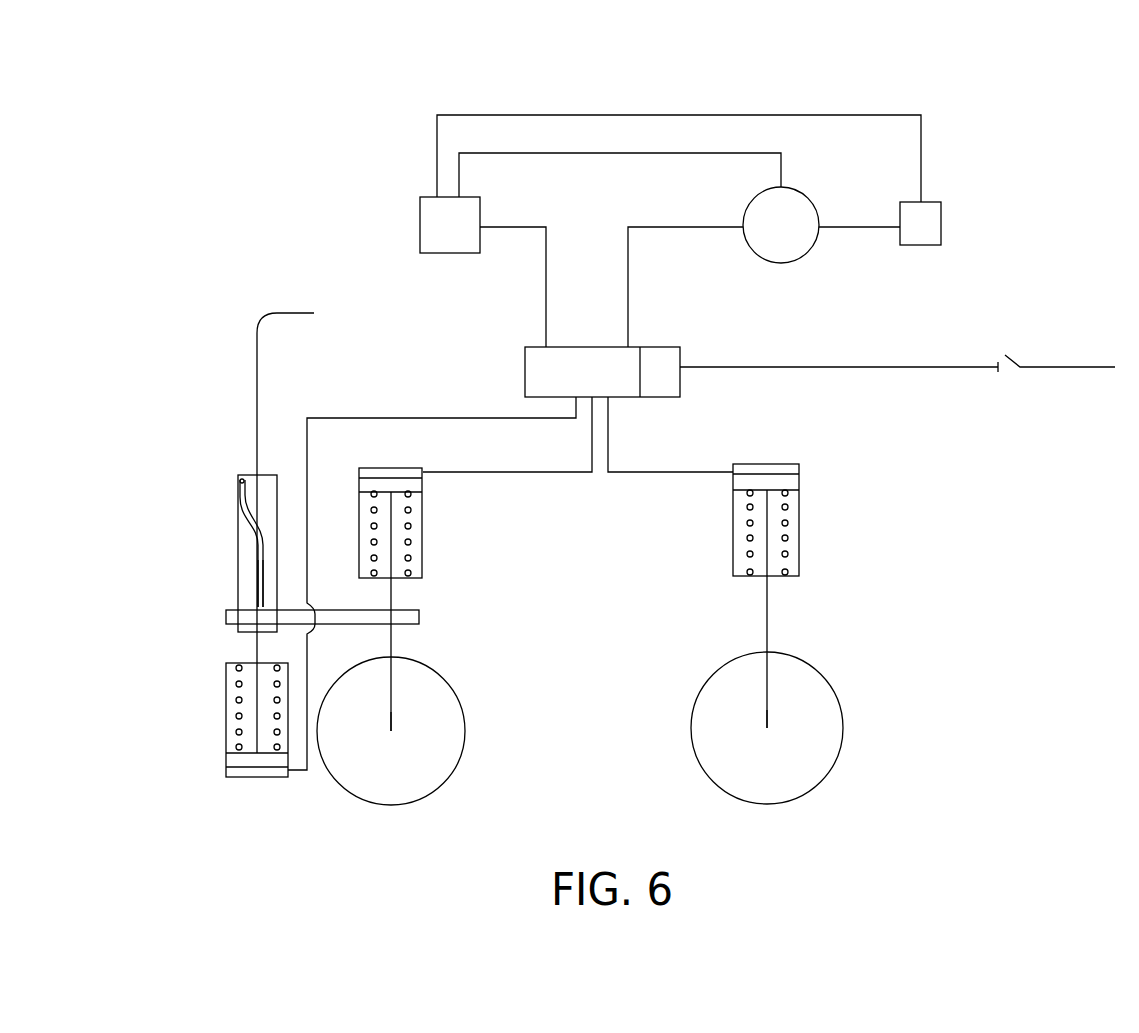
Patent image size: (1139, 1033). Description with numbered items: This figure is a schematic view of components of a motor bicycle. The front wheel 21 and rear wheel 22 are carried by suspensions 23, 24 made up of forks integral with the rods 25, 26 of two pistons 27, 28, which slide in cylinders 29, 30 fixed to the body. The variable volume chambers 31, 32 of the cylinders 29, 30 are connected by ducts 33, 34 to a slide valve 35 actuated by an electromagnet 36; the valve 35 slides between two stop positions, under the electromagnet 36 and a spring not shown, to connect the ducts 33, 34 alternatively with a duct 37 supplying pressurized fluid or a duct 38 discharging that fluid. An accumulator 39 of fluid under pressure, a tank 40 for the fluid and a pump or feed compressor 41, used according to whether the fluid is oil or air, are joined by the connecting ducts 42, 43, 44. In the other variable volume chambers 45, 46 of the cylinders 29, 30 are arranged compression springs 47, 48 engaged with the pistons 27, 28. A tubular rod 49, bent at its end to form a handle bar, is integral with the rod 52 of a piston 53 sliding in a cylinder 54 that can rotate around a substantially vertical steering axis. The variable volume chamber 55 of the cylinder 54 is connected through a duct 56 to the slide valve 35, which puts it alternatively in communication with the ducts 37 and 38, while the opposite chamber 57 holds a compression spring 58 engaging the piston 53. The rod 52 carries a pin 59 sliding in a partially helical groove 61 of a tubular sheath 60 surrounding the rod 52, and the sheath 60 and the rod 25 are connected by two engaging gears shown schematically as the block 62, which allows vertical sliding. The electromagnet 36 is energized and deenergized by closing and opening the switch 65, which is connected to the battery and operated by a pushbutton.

The front wheel 21 is at (410, 782).
The rear wheel 22 is at (793, 770).
The front suspension 23 is at (392, 724).
The rear suspension 24 is at (767, 714).
The piston rod 25 is at (392, 643).
The piston rod 26 is at (767, 627).
The piston 27 is at (403, 485).
The piston 28 is at (785, 483).
The cylinder 29 is at (423, 540).
The cylinder 30 is at (802, 533).
The variable volume chamber 31 is at (393, 470).
The variable volume chamber 32 is at (768, 467).
The duct 33 is at (573, 478).
The duct 34 is at (687, 478).
The slide valve 35 is at (540, 366).
The electromagnet 36 is at (655, 387).
The supply duct 37 is at (628, 260).
The discharge duct 38 is at (545, 267).
The accumulator 39 is at (760, 230).
The tank 40 is at (438, 221).
The pump or feed compressor 41 is at (927, 233).
The duct 42 is at (652, 115).
The duct 43 is at (877, 227).
The duct 44 is at (675, 155).
The variable volume chamber 45 is at (412, 560).
The variable volume chamber 46 is at (793, 496).
The compression spring 47 is at (410, 510).
The compression spring 48 is at (786, 556).
The tubular rod 49 is at (255, 338).
The piston rod 52 is at (255, 645).
The piston 53 is at (235, 760).
The cylinder 54 is at (230, 692).
The variable volume chamber 55 is at (235, 773).
The duct 56 is at (352, 417).
The variable volume chamber 57 is at (233, 670).
The compression spring 58 is at (240, 715).
The pin 59 is at (258, 603).
The tubular sheath 60 is at (242, 518).
The partially helical groove 61 is at (242, 478).
The gear block 62 is at (243, 617).
The switch 65 is at (1018, 362).